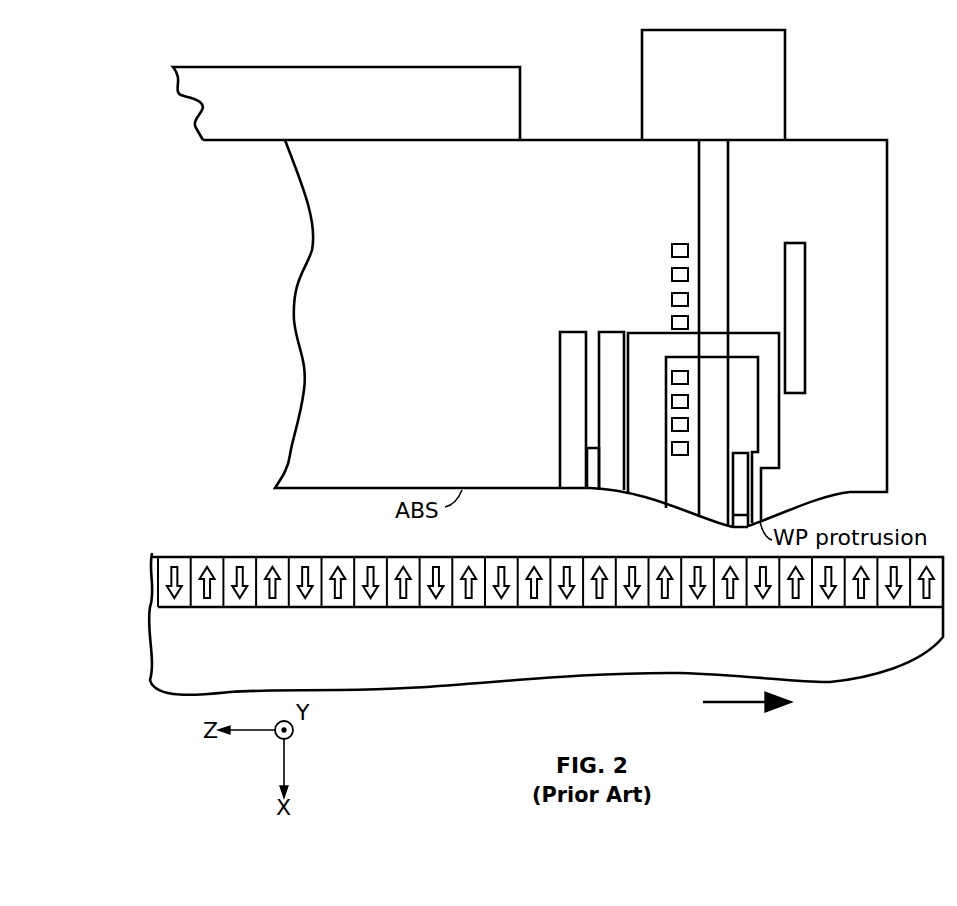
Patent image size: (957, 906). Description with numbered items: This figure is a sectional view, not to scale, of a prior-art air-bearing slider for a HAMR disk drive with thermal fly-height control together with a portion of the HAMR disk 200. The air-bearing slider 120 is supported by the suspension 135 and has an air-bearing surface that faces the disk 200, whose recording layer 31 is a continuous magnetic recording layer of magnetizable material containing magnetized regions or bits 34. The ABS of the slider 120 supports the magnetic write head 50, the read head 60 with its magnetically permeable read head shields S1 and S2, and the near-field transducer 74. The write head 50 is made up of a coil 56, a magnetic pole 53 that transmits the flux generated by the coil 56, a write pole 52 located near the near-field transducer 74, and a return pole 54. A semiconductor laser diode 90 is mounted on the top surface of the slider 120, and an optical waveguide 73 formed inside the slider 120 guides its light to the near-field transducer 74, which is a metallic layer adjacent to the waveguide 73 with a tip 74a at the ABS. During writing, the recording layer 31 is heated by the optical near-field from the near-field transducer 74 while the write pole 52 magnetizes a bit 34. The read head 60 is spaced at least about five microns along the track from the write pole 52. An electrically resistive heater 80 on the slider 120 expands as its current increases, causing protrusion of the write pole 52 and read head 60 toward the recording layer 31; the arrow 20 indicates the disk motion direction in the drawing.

The suspension 135 is at (448, 73).
The semiconductor laser diode 90 is at (770, 100).
The air-bearing slider 120 is at (316, 388).
The optical waveguide 73 is at (712, 280).
The electrically resistive heater 80 is at (795, 270).
The coil 56 is at (672, 250).
The magnetic write head 50 is at (647, 276).
The return pole 54 is at (648, 345).
The magnetic pole 53 is at (768, 375).
The write pole 52 is at (757, 480).
The read head shield S2 is at (612, 335).
The read head shield S1 is at (573, 410).
The read head 60 is at (585, 476).
The near-field transducer 74 is at (740, 452).
The tip 74a is at (740, 527).
The disk 200 is at (832, 667).
The recording layer 31 is at (516, 607).
The bits 34 is at (895, 612).
The direction of disk motion 20 is at (733, 703).